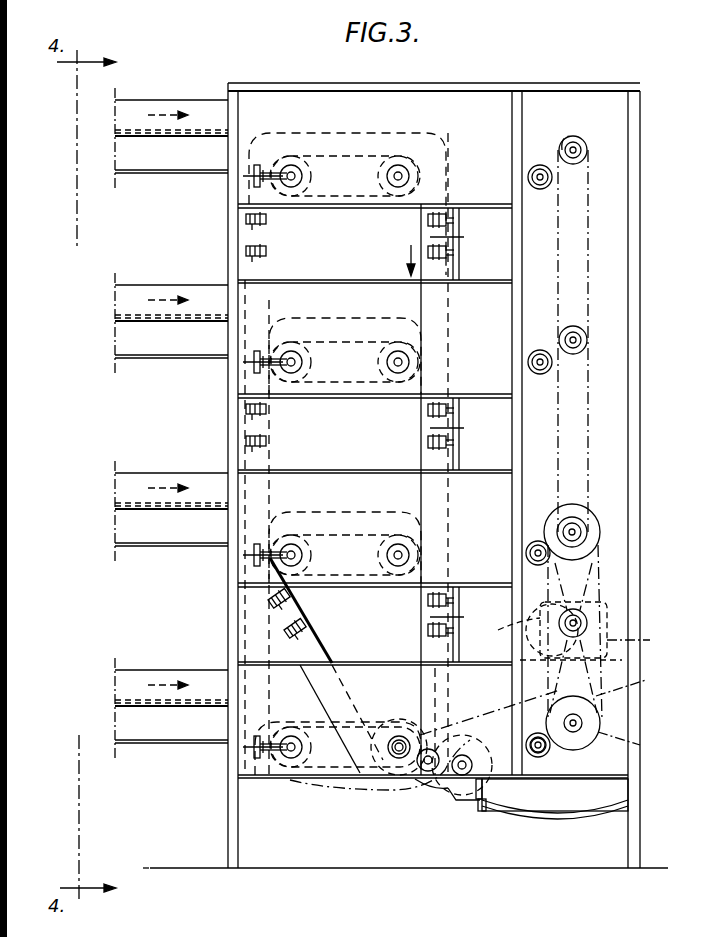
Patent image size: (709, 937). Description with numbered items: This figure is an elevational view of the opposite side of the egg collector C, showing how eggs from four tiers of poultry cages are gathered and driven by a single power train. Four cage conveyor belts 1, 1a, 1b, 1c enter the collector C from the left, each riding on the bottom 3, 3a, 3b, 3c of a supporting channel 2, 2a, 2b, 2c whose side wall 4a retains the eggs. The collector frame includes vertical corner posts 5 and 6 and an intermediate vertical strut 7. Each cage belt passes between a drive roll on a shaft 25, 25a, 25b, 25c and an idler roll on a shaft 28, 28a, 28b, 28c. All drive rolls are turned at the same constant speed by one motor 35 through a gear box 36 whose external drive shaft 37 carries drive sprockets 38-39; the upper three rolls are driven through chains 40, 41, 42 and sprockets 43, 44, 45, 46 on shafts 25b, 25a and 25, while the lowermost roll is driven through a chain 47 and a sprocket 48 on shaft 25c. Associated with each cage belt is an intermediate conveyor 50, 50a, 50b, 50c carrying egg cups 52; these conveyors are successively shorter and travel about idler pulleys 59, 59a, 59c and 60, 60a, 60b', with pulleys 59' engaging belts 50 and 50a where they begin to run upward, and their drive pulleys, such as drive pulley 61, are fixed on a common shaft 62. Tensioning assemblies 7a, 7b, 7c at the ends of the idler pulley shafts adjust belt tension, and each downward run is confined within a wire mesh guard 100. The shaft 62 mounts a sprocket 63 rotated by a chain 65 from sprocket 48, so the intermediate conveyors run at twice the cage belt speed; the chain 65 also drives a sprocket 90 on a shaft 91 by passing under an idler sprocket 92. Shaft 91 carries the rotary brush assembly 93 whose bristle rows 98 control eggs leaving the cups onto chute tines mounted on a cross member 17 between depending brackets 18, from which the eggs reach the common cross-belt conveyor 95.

The cage conveyor belt 1 is at (128, 130).
The cage conveyor belt 1a is at (128, 318).
The cage conveyor belt 1b is at (124, 508).
The cage conveyor belt 1c is at (126, 702).
The supporting trough or channel 2 is at (200, 100).
The supporting trough or channel 2a is at (183, 285).
The supporting trough or channel 2b is at (178, 473).
The supporting trough or channel 2c is at (186, 670).
The channel bottom 3 is at (170, 137).
The channel bottom 3a is at (176, 328).
The channel bottom 3b is at (180, 518).
The channel bottom 3c is at (186, 708).
The side wall 4a is at (165, 110).
The vertical corner post 5 is at (228, 377).
The vertical corner post 6 is at (628, 256).
The intermediate vertical strut 7 is at (512, 118).
The tensioning assembly 7a is at (243, 356).
The tensioning assembly 7b is at (243, 558).
The tensioning assembly 7c is at (246, 750).
The drive roll shaft 25 is at (572, 140).
The drive roll shaft 25a is at (578, 348).
The drive roll shaft 25b is at (582, 532).
The drive roll shaft 25c is at (582, 722).
The idler roll shaft 28 is at (540, 165).
The idler roll shaft 28a is at (528, 362).
The idler roll shaft 28b is at (526, 553).
The idler roll shaft 28c is at (548, 754).
The motor 35 is at (507, 631).
The gear box 36 is at (607, 622).
The external drive shaft 37 is at (573, 610).
The drive sprockets 38-39 is at (654, 640).
The chain 40 is at (600, 548).
The chain 41 is at (592, 446).
The chain 42 is at (592, 236).
The sprocket 43 is at (546, 516).
The sprocket 44 is at (594, 508).
The sprocket 45 is at (592, 316).
The sprocket 46 is at (570, 162).
The chain 47 is at (632, 679).
The sprocket 48 is at (636, 746).
The intermediate conveyor 50 is at (332, 157).
The intermediate conveyor 50a is at (337, 344).
The intermediate conveyor 50b is at (332, 540).
The intermediate conveyor 50c is at (292, 740).
The egg cup 52 is at (266, 250).
The idler pulley 59 is at (384, 179).
The pulley 59' is at (345, 555).
The idler pulley 59a is at (384, 372).
The idler pulley 59c is at (304, 778).
The idler pulley 60 is at (380, 176).
The idler pulley 60a is at (382, 360).
The idler pulley 60b' is at (371, 591).
The drive pulley 61 is at (376, 736).
The conveyor drive shaft 62 is at (399, 743).
The sprocket 63 is at (408, 775).
The chain 65 is at (470, 718).
The sprocket 90 is at (476, 752).
The brush shaft 91 is at (430, 772).
The idler sprocket 92 is at (440, 722).
The rotary brush assembly 93 is at (486, 792).
The cross-belt conveyor 95 is at (600, 798).
The bristle rows 98 is at (482, 806).
The cross member 17 is at (466, 805).
The depending bracket 18 is at (445, 796).
The wire mesh guard 100 is at (460, 258).
The egg collector C is at (650, 138).